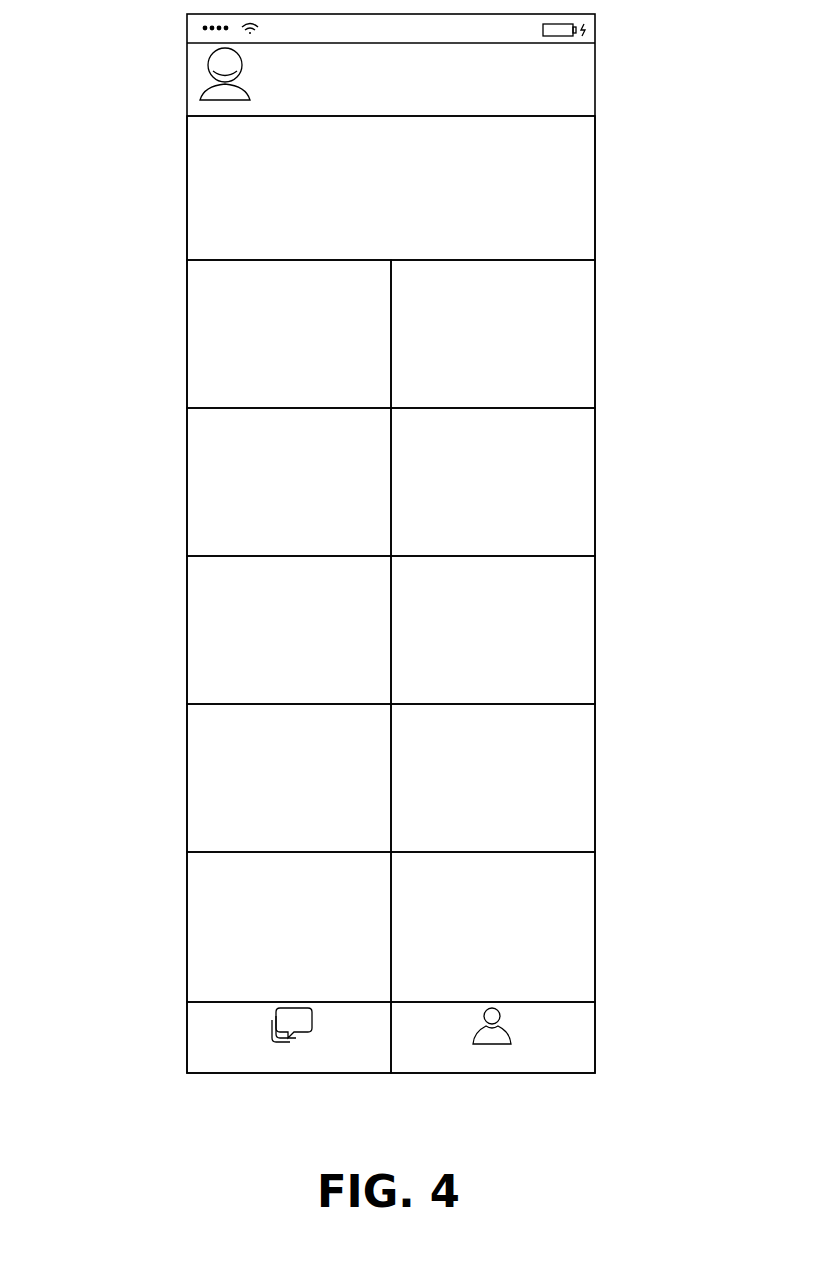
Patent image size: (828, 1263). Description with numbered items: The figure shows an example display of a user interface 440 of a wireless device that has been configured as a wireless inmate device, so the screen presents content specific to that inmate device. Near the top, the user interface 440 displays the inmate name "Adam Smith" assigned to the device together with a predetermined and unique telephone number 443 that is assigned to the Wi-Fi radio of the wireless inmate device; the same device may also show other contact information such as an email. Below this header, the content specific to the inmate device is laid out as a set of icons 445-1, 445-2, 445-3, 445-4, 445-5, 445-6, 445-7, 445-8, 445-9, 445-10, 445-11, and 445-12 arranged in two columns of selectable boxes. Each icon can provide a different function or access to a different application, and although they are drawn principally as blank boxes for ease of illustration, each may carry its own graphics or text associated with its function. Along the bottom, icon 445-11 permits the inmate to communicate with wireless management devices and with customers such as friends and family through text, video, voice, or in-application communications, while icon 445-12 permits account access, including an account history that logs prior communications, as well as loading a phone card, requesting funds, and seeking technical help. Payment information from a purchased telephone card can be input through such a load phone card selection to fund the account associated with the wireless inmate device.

The user interface 440 is at (115, 54).
The telephone number 443 is at (173, 210).
The icon 445-1 is at (187, 344).
The icon 445-2 is at (595, 355).
The icon 445-3 is at (187, 484).
The icon 445-4 is at (595, 482).
The icon 445-5 is at (187, 632).
The icon 445-6 is at (595, 634).
The icon 445-7 is at (187, 773).
The icon 445-8 is at (595, 775).
The icon 445-9 is at (187, 916).
The icon 445-10 is at (595, 918).
The icon 445-11 is at (187, 1044).
The icon 445-12 is at (595, 1047).